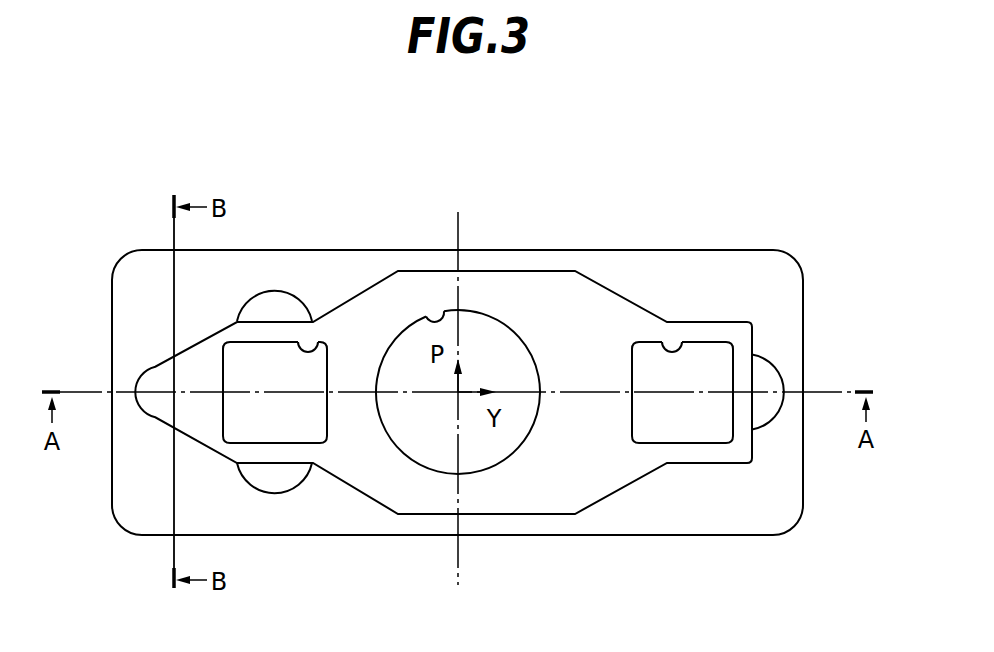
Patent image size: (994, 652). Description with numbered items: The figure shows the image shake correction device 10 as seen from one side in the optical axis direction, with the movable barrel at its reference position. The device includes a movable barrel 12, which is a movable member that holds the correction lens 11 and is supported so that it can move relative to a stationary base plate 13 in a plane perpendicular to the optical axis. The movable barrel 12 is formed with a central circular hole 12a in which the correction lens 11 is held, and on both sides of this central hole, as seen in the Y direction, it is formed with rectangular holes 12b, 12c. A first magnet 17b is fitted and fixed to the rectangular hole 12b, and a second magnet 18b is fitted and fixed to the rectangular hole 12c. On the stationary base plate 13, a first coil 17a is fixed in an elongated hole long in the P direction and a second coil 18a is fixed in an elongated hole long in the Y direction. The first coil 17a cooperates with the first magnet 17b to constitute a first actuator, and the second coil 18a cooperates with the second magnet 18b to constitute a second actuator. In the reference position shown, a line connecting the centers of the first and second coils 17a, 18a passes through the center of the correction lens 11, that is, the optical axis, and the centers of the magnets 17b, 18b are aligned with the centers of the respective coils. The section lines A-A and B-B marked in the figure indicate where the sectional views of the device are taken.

The image shake correction device 10 is at (736, 240).
The correction lens 11 is at (510, 436).
The movable barrel 12 is at (162, 413).
The central circular hole 12a is at (425, 318).
The rectangular hole 12b is at (320, 342).
The rectangular hole 12c is at (682, 347).
The stationary base plate 13 is at (143, 494).
The first coil 17a is at (252, 291).
The first magnet 17b is at (232, 355).
The second coil 18a is at (767, 407).
The second magnet 18b is at (722, 355).